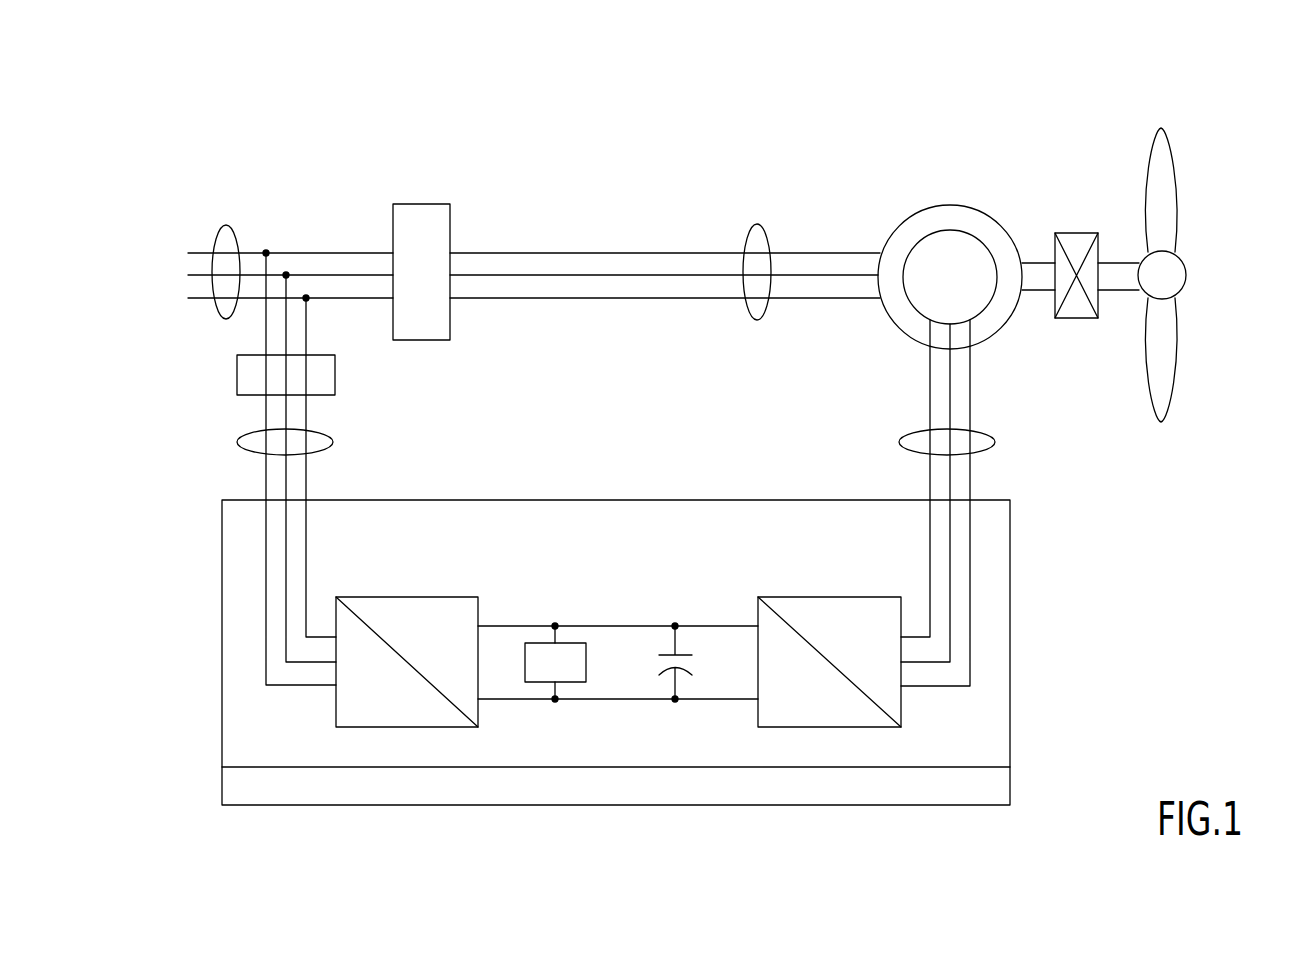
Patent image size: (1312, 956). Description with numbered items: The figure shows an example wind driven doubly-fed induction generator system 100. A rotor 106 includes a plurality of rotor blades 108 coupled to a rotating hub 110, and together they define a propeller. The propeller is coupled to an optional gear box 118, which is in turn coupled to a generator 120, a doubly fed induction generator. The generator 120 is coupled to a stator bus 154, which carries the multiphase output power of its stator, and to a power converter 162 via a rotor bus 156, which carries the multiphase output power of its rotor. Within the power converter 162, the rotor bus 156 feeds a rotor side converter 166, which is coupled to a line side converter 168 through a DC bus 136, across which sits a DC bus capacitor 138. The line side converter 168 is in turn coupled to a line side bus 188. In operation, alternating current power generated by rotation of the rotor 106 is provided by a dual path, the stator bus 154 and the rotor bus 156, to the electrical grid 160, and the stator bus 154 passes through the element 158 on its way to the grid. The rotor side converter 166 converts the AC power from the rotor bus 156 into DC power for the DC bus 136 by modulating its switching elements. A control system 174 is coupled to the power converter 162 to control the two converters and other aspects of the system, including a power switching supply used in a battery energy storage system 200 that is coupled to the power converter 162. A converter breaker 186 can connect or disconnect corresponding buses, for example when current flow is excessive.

The wind driven doubly-fed induction generator system 100 is at (580, 142).
The rotor 106 is at (1245, 162).
The rotor blades 108 is at (1166, 204).
The rotating hub 110 is at (1180, 276).
The gear box 118 is at (1078, 233).
The generator 120 is at (950, 205).
The DC bus 136 is at (693, 626).
The DC bus capacitor 138 is at (665, 672).
The stator bus 154 is at (768, 225).
The rotor bus 156 is at (994, 436).
The transformer 158 is at (422, 204).
The electrical grid 160 is at (234, 226).
The power converter 162 is at (1010, 578).
The rotor side converter 166 is at (901, 707).
The line side converter 168 is at (336, 707).
The control system 174 is at (1010, 787).
The converter breaker 186 is at (237, 373).
The line side bus 188 is at (237, 440).
The battery energy storage system 200 is at (575, 643).